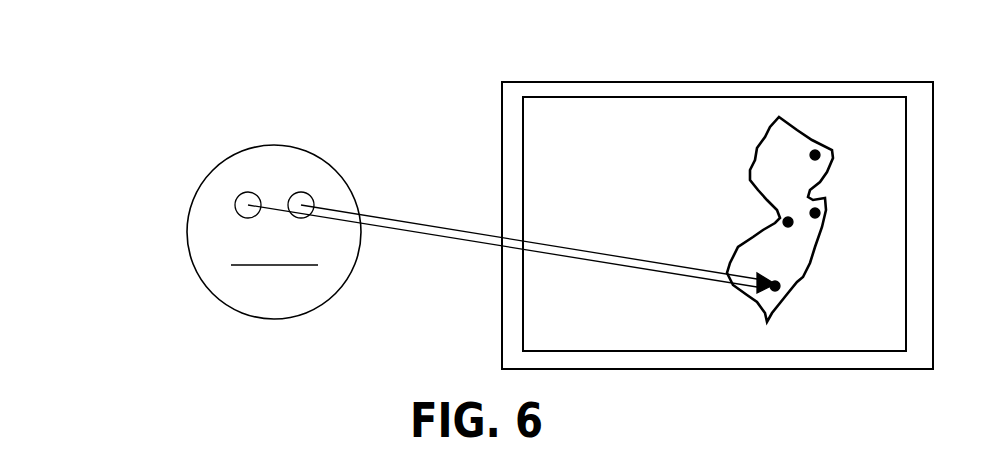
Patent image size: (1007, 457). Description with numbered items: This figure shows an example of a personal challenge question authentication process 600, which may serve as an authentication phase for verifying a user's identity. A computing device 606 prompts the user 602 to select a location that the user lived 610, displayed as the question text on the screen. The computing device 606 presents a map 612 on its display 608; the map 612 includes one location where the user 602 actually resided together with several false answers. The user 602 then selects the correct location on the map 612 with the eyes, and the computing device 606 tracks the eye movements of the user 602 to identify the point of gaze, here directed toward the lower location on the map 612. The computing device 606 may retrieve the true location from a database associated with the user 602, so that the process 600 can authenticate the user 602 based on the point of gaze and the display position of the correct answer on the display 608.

The personal challenge question authentication process 600 is at (139, 165).
The user 602 is at (333, 162).
The computing device 606 is at (502, 108).
The display 608 is at (888, 108).
The location that the user lived 610 is at (617, 118).
The map 612 is at (767, 132).